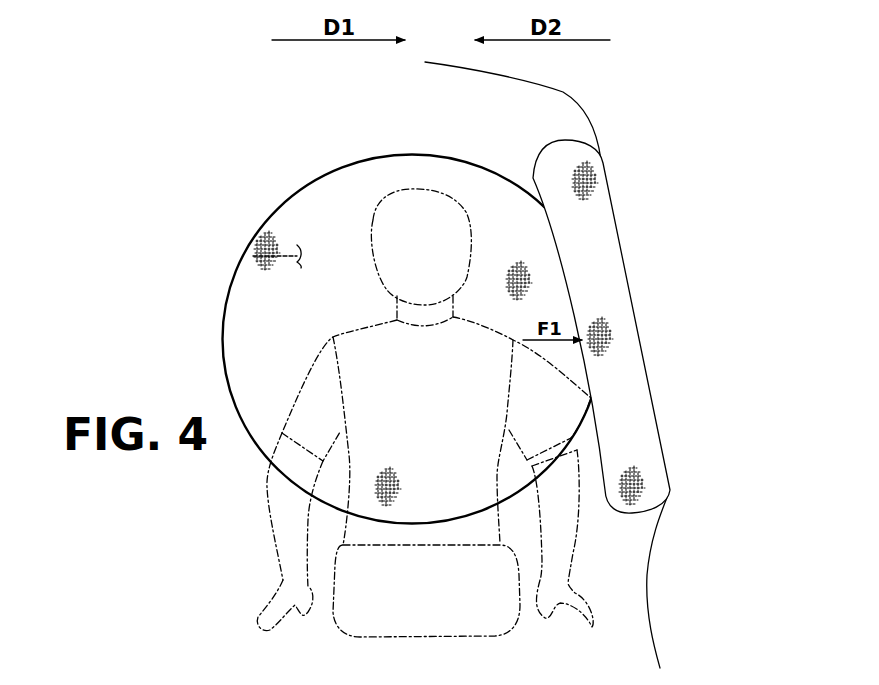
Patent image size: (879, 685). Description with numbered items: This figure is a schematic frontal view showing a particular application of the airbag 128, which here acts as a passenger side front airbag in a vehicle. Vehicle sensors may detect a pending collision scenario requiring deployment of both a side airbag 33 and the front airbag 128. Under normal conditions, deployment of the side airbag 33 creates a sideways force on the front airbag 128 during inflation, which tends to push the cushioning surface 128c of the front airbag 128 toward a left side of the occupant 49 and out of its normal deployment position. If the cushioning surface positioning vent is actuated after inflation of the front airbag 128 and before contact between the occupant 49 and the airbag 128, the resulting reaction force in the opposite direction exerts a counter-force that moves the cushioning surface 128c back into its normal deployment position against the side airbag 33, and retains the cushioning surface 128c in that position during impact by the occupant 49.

The side airbag 33 is at (633, 289).
The occupant 49 is at (407, 200).
The airbag 128 is at (308, 185).
The cushioning surface 128c is at (258, 257).